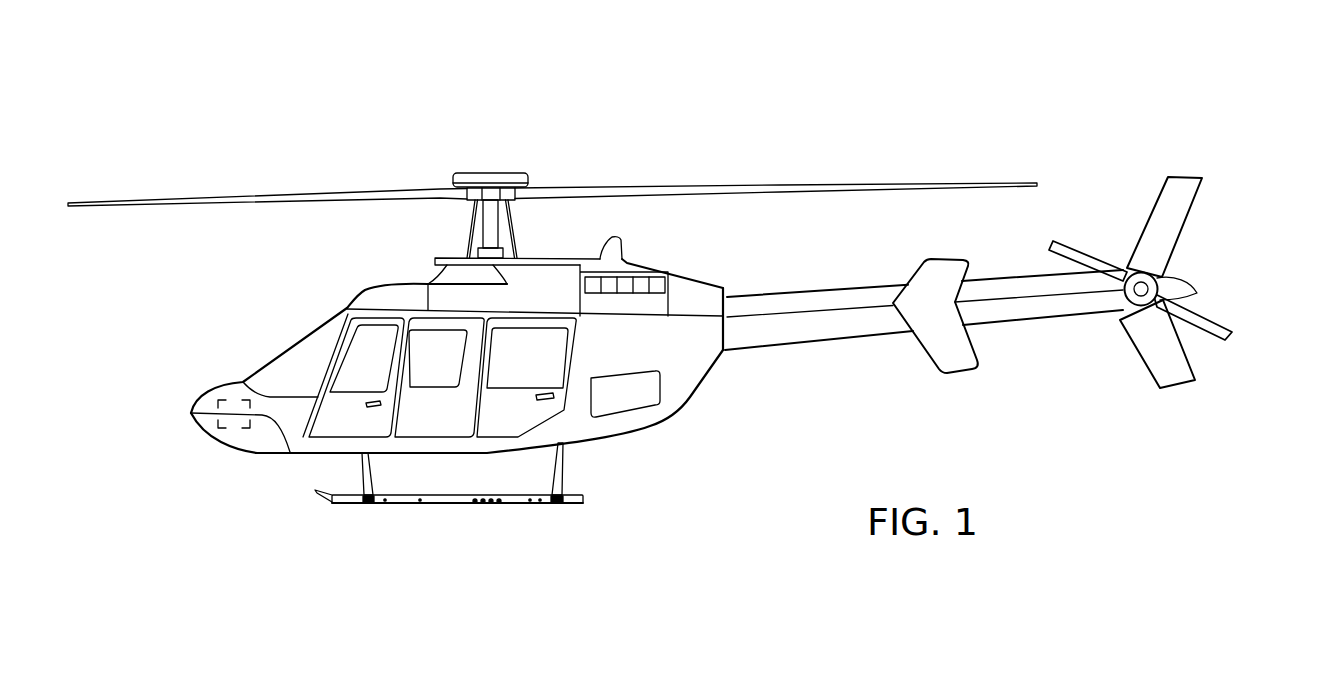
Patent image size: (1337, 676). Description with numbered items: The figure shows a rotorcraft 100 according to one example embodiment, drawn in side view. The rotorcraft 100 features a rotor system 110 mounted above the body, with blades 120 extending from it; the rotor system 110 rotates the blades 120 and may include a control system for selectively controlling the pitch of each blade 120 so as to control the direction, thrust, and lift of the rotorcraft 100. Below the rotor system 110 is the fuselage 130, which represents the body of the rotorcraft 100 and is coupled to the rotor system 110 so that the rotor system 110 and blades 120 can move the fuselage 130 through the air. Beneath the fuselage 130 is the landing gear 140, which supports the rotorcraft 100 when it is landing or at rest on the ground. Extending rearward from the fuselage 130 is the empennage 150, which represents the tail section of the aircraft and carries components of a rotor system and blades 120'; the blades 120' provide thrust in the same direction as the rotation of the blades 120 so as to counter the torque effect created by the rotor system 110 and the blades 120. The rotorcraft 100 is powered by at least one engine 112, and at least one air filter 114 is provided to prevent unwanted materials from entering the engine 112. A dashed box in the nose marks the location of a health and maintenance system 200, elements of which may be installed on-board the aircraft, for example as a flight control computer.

The rotorcraft 100 is at (690, 335).
The rotor system 110 is at (490, 172).
The blades 120 is at (552, 165).
The blades 120' is at (1181, 282).
The engine 112 is at (665, 243).
The air filter 114 is at (624, 290).
The fuselage 130 is at (242, 450).
The landing gear 140 is at (424, 504).
The empennage 150 is at (820, 344).
The health and maintenance system 200 is at (227, 400).